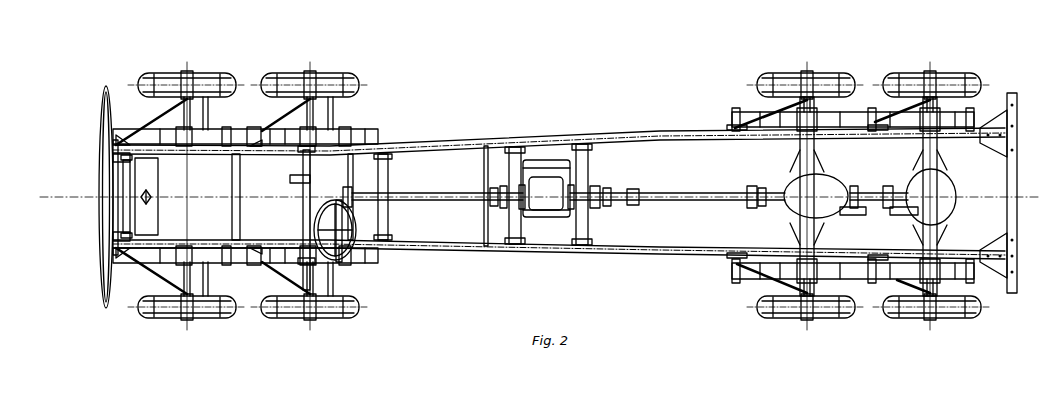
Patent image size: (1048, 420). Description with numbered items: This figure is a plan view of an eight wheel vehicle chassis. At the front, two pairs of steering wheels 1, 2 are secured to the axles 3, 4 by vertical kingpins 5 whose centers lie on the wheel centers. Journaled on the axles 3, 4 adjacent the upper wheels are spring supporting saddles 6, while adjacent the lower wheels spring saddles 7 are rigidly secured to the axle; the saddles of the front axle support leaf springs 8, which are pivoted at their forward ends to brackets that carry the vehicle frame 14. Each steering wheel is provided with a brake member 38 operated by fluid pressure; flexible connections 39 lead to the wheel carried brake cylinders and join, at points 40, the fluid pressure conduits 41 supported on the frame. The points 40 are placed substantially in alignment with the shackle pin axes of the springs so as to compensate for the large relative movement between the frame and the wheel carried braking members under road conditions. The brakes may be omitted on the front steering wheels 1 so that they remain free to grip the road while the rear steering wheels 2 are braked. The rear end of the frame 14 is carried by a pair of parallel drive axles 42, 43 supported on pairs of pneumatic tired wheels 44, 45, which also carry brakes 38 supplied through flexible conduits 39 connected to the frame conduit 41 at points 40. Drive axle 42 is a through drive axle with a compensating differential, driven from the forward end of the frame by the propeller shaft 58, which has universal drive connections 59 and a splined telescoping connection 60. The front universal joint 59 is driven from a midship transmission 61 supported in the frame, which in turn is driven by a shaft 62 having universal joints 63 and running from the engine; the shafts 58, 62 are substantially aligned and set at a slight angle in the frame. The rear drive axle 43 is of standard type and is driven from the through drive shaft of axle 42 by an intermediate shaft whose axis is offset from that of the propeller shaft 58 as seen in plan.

The steering wheels 1 is at (148, 76).
The steering wheels 2 is at (362, 85).
The axle 3 is at (200, 108).
The axle 4 is at (334, 104).
The vertical kingpins 5 is at (189, 78).
The spring supporting saddles 6 is at (192, 144).
The spring saddles 7 is at (186, 250).
The leaf springs 8 is at (102, 90).
The vehicle frame 14 is at (530, 135).
The brake members 38 is at (233, 74).
The flexible connections 39 is at (122, 140).
The connection points 40 is at (111, 150).
The fluid pressure conduits 41 is at (232, 154).
The drive axle 42 is at (800, 160).
The drive axle 43 is at (945, 160).
The pneumatic tired wheels 44 is at (772, 74).
The pneumatic tired wheels 45 is at (978, 82).
The propeller shaft 58 is at (680, 192).
The universal drive connections 59 is at (612, 190).
The splined drive connection 60 is at (636, 204).
The midship transmission 61 is at (568, 152).
The shaft 62 is at (455, 190).
The universal joints 63 is at (380, 148).